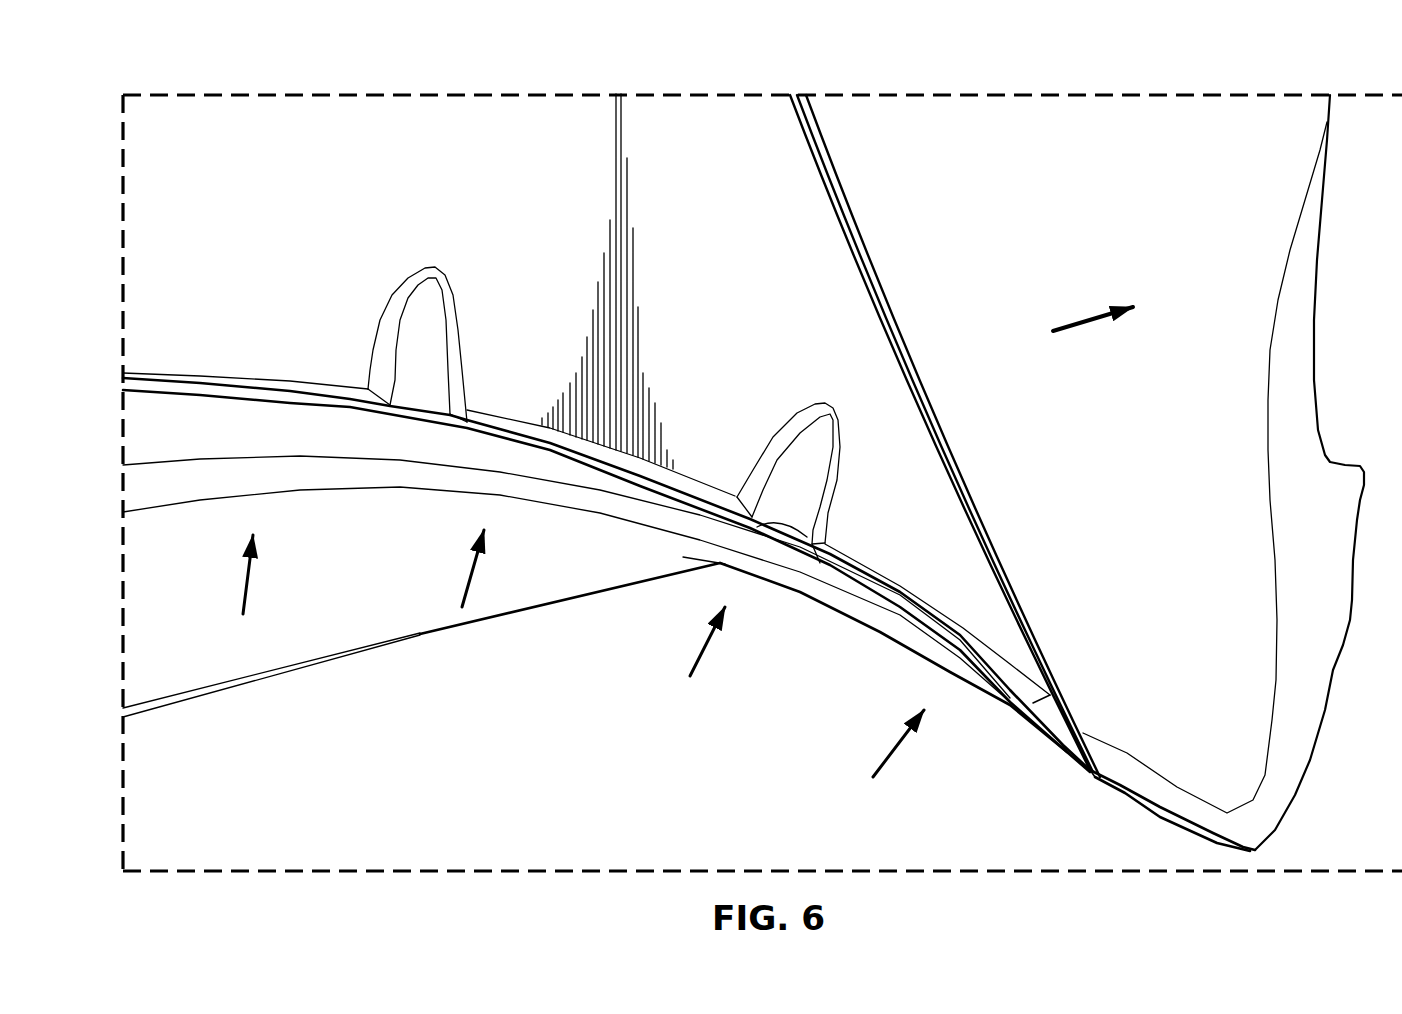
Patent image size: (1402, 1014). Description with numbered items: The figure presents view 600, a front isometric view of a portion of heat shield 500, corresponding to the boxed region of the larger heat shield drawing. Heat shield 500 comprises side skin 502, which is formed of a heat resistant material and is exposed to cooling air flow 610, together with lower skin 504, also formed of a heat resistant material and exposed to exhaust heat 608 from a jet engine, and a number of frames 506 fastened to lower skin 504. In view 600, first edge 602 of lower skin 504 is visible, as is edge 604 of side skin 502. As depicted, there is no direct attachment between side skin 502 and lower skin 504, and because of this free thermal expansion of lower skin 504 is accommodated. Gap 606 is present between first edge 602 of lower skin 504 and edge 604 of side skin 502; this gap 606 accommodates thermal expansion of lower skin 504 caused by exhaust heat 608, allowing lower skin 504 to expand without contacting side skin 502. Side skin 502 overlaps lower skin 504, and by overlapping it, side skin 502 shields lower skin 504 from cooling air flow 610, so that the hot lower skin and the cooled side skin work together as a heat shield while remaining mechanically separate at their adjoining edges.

The view 600 is at (343, 64).
The heat shield 500 is at (297, 162).
The side skin 502 is at (1228, 364).
The lower skin 504 is at (348, 628).
The number of frames 506 is at (290, 350).
The first edge 602 is at (1040, 735).
The edge 604 is at (1142, 800).
The gap 606 is at (1085, 767).
The exhaust heat 608 is at (718, 648).
The cooling air flow 610 is at (1093, 318).